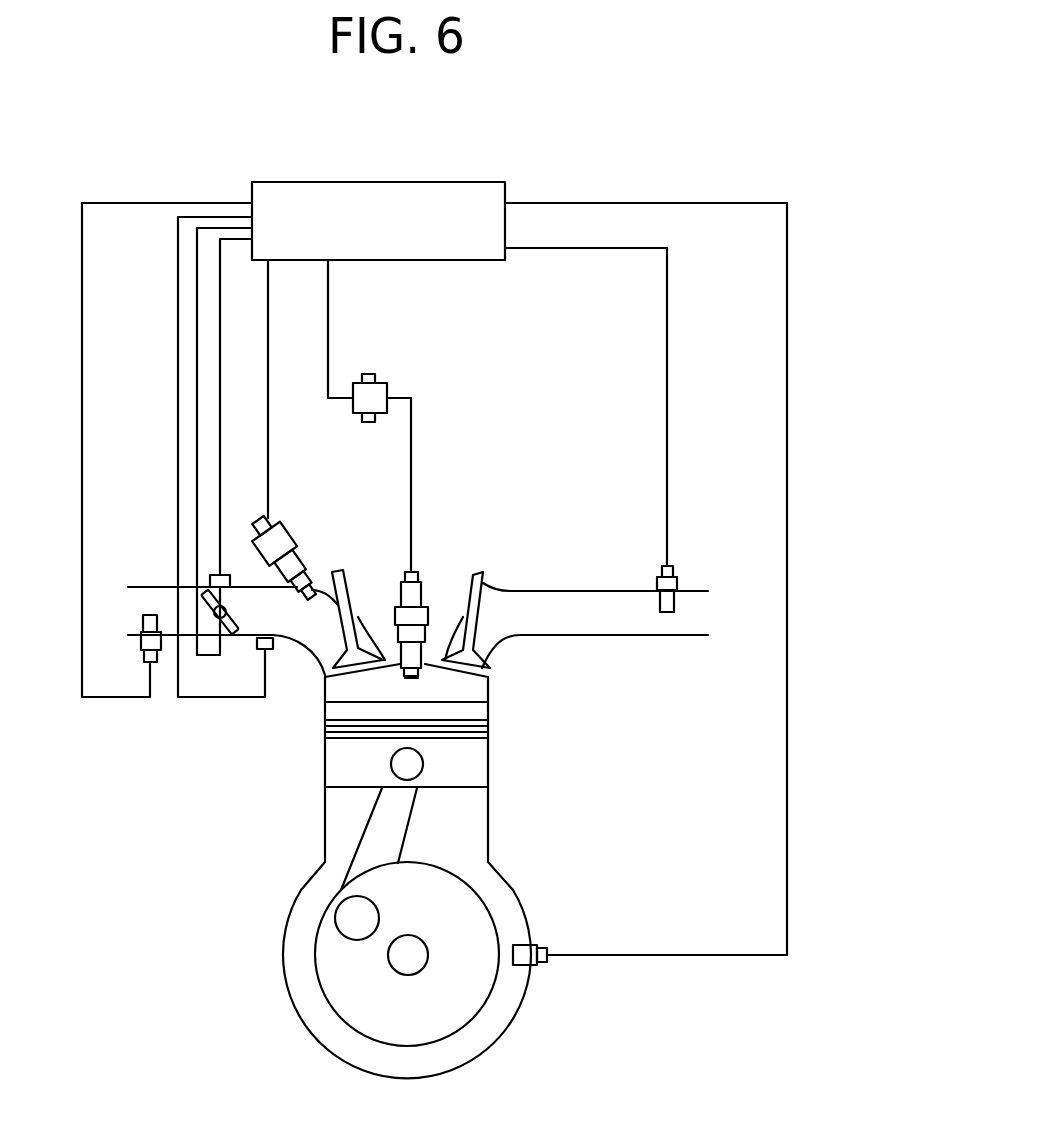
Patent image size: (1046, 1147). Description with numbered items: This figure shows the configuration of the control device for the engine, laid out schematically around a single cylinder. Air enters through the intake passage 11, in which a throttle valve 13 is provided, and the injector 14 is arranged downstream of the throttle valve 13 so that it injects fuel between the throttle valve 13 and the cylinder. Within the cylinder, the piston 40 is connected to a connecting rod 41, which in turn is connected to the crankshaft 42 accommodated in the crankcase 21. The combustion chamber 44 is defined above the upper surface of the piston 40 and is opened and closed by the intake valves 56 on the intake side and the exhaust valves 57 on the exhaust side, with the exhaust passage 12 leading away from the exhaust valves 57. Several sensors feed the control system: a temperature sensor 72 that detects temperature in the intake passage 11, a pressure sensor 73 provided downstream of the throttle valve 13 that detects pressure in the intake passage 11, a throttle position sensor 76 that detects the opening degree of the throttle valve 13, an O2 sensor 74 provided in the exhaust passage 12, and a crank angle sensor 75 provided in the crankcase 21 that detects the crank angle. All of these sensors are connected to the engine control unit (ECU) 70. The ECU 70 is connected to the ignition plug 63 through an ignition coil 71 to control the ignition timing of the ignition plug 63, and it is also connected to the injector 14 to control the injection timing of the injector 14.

The intake passage 11 is at (160, 587).
The exhaust passage 12 is at (595, 591).
The throttle valve 13 is at (235, 640).
The injector 14 is at (299, 523).
The crankcase 21 is at (517, 1018).
The piston 40 is at (460, 762).
The connecting rod 41 is at (363, 836).
The crankshaft 42 is at (427, 970).
The combustion chamber 44 is at (460, 685).
The intake valves 56 is at (352, 597).
The exhaust valves 57 is at (487, 585).
The ignition plug 63 is at (424, 588).
The engine control unit (ECU) 70 is at (409, 182).
The ignition coil 71 is at (388, 385).
The temperature sensor 72 is at (155, 664).
The pressure sensor 73 is at (267, 650).
The O2 sensor 74 is at (675, 570).
The crank angle sensor 75 is at (543, 945).
The throttle position sensor 76 is at (225, 575).